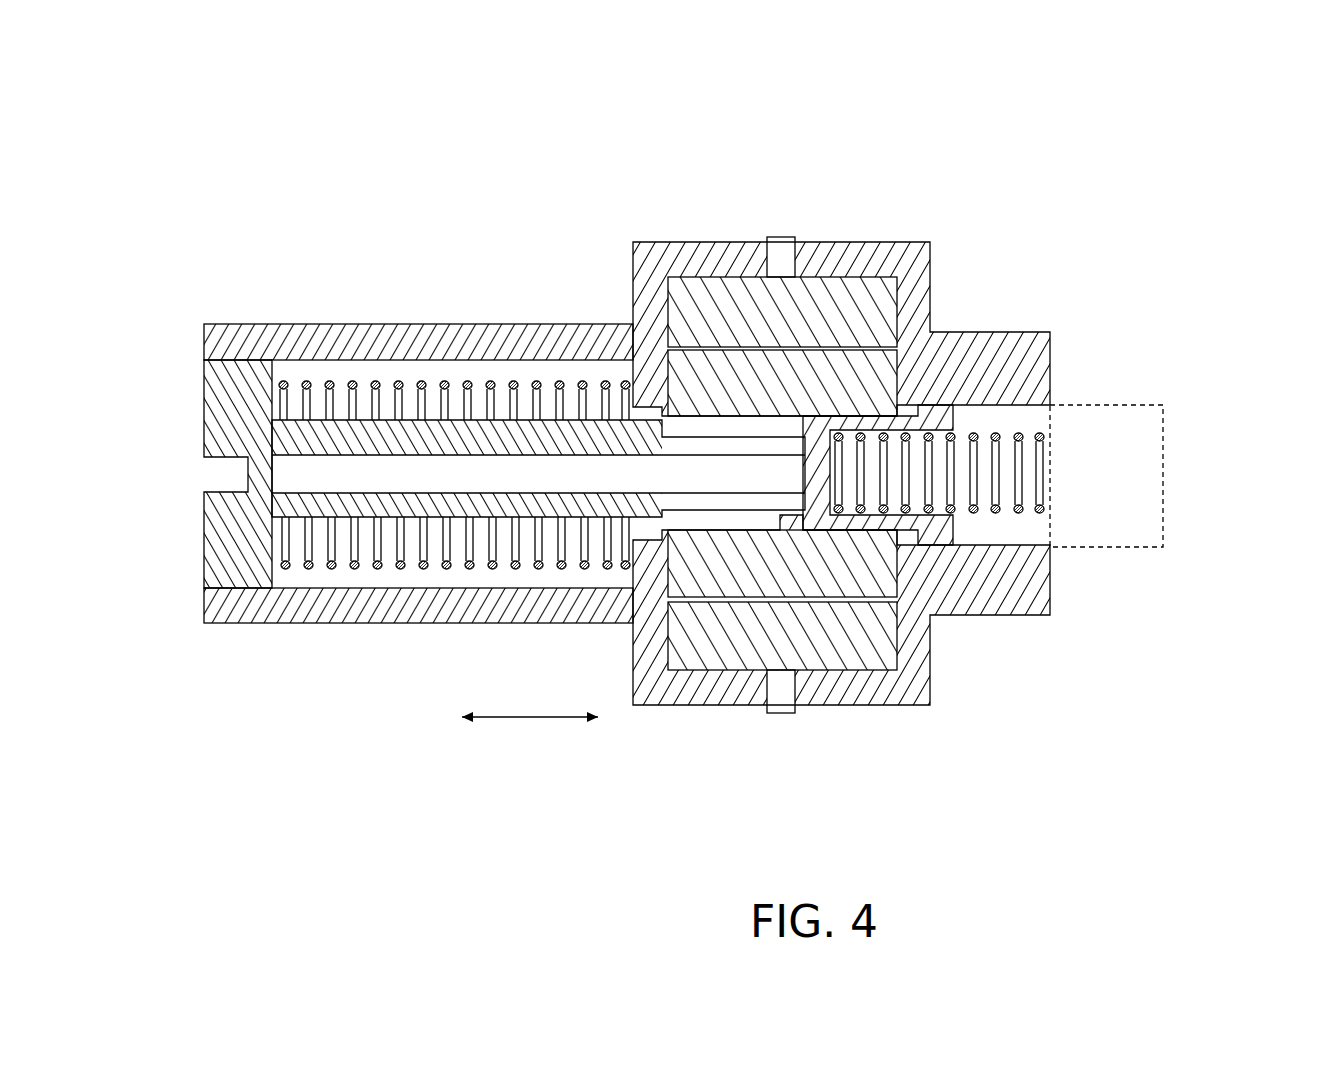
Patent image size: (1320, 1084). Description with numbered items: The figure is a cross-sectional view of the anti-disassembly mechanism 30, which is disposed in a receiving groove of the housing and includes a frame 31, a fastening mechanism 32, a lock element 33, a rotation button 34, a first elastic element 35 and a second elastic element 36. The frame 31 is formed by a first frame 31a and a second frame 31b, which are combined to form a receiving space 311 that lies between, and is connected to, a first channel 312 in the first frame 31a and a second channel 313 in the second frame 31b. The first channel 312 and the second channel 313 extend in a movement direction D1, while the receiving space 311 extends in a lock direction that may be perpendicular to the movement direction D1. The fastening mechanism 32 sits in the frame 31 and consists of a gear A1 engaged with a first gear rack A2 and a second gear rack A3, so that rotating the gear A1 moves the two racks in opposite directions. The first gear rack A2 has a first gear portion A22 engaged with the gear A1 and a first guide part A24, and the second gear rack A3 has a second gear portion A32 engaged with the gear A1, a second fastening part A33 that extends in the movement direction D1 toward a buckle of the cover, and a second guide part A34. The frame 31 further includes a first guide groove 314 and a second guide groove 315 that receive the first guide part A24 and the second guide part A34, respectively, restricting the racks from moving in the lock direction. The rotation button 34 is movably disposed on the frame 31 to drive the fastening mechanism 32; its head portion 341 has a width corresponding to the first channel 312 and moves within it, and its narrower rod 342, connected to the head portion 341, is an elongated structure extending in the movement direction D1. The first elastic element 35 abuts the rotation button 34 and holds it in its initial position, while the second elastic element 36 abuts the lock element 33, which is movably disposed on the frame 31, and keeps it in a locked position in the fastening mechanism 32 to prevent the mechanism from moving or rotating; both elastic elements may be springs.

The anti-disassembly mechanism 30 is at (1300, 94).
The frame 31 is at (652, 480).
The first frame 31a is at (774, 692).
The second frame 31b is at (771, 254).
The receiving space 311 is at (680, 673).
The first channel 312 is at (498, 578).
The second channel 313 is at (980, 542).
The first guide groove 314 is at (768, 684).
The second guide groove 315 is at (757, 242).
The fastening mechanism 32 is at (170, 74).
The lock element 33 is at (954, 417).
The rotation button 34 is at (459, 525).
The head portion 341 is at (232, 548).
The rod 342 is at (338, 503).
The first elastic element 35 is at (422, 380).
The second elastic element 36 is at (1025, 516).
The gear A1 is at (863, 377).
The first gear rack A2 is at (846, 702).
The second gear rack A3 is at (856, 253).
The first gear portion A22 is at (821, 668).
The first guide part A24 is at (772, 695).
The second gear portion A32 is at (833, 294).
The second fastening part A33 is at (1088, 420).
The second guide part A34 is at (786, 240).
The movement direction D1 is at (530, 700).